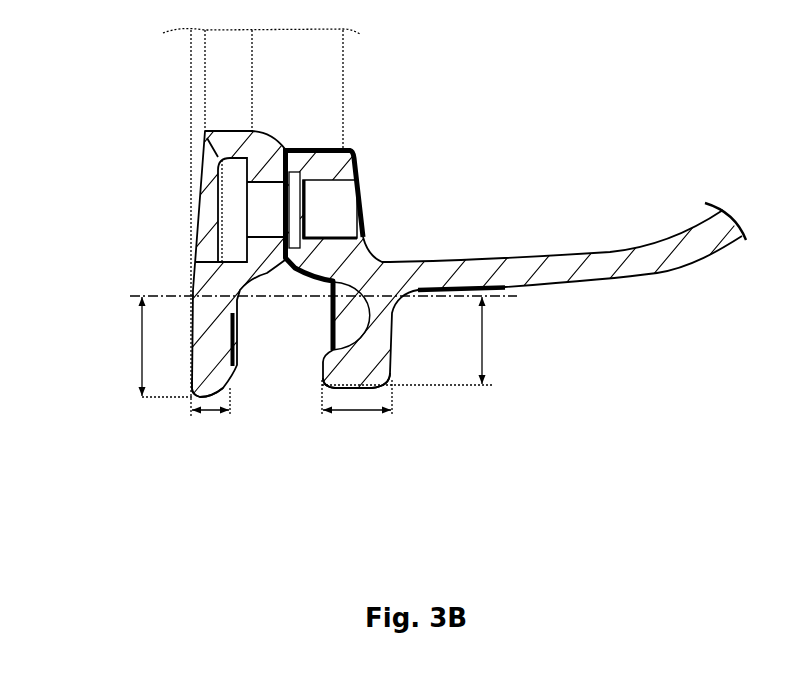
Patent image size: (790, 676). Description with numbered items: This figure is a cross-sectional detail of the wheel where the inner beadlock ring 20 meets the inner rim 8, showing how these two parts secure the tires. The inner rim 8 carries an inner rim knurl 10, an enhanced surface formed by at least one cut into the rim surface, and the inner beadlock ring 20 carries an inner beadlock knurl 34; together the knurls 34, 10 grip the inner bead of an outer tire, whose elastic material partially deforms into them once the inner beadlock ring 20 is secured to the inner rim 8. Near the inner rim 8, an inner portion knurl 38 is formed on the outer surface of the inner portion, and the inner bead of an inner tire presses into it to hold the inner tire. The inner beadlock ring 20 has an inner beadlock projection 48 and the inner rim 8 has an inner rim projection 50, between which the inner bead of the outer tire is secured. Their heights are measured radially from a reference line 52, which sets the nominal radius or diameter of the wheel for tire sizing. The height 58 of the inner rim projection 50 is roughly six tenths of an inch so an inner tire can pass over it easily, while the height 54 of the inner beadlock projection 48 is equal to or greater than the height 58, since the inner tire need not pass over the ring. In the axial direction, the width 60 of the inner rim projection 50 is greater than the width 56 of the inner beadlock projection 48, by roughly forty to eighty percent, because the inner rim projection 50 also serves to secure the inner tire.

The inner rim 8 is at (332, 165).
The inner rim knurl 10 is at (324, 348).
The inner beadlock ring 20 is at (232, 148).
The inner beadlock knurl 34 is at (234, 376).
The inner portion knurl 38 is at (461, 286).
The inner beadlock projection 48 is at (197, 397).
The inner rim projection 50 is at (372, 368).
The reference line 52 is at (167, 292).
The height of the inner beadlock projection 54 is at (137, 344).
The width of the inner beadlock projection 56 is at (210, 412).
The height of the inner rim projection 58 is at (482, 333).
The width of the inner rim projection 60 is at (357, 411).